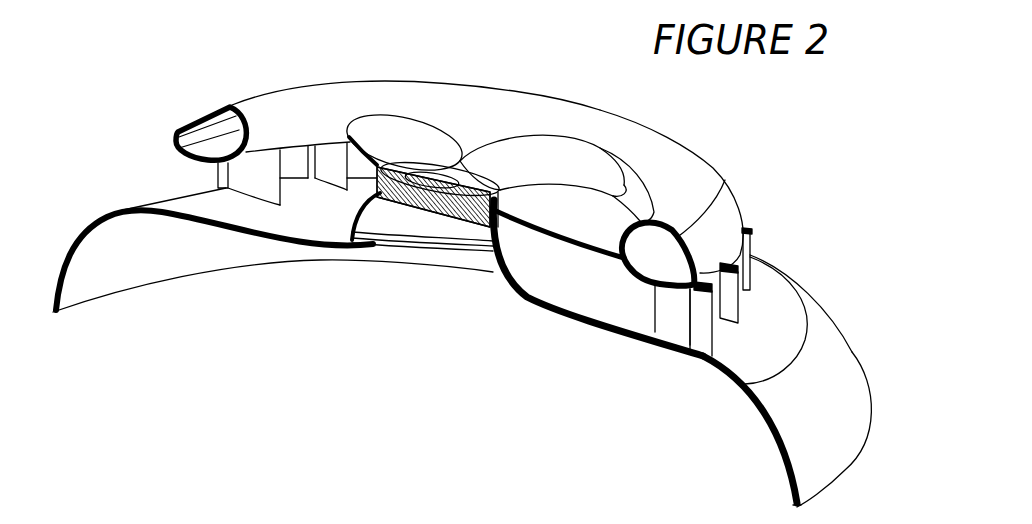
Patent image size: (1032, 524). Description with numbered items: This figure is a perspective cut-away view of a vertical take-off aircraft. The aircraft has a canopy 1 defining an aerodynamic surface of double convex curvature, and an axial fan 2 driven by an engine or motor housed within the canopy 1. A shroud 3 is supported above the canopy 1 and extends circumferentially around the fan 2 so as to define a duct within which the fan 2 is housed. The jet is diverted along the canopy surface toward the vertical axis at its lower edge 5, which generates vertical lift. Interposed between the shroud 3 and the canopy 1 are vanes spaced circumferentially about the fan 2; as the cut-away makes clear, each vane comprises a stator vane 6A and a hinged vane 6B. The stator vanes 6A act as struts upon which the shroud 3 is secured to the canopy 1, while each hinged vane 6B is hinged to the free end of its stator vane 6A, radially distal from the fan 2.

The canopy 1 is at (850, 353).
The axial fan 2 is at (385, 120).
The shroud 3 is at (705, 177).
The lower edge 5 is at (83, 300).
The stator vane 6A is at (270, 198).
The hinged vane 6B is at (216, 178).